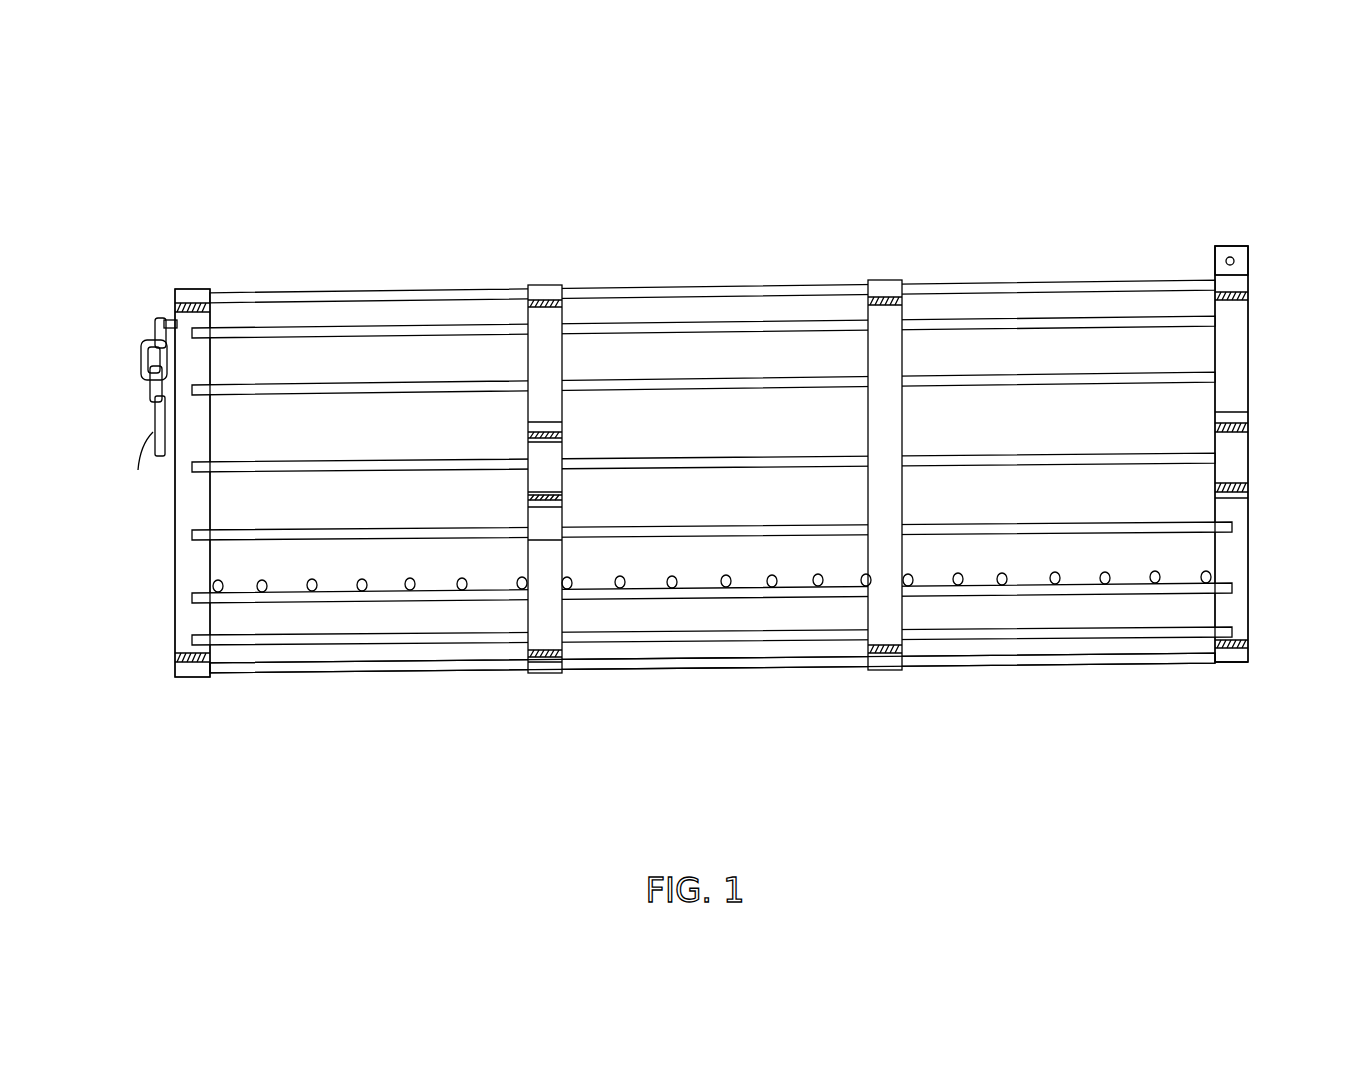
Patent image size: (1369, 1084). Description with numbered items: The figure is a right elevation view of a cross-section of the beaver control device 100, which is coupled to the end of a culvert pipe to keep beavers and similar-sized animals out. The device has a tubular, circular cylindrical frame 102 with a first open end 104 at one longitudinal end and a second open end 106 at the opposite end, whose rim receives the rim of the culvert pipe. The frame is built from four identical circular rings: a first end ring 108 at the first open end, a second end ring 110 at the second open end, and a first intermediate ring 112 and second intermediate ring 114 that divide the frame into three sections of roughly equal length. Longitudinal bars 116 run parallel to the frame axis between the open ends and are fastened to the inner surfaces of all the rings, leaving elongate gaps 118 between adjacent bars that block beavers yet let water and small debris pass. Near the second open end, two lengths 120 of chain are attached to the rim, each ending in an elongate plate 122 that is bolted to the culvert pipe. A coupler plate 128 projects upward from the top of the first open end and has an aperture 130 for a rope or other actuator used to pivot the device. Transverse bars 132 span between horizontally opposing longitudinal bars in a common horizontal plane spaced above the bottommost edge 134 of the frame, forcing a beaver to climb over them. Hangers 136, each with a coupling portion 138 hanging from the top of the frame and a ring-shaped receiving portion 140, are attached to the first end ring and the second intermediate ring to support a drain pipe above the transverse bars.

The beaver control device 100 is at (1233, 125).
The frame 102 is at (152, 275).
The first open end 104 is at (1288, 600).
The second open end 106 is at (150, 618).
The first end ring 108 is at (1238, 467).
The second end ring 110 is at (190, 678).
The first intermediate ring 112 is at (880, 672).
The second intermediate ring 114 is at (540, 677).
The longitudinal bars 116 is at (378, 392).
The gaps 118 is at (682, 370).
The lengths of chain 120 is at (101, 426).
The elongate plate 122 is at (153, 458).
The coupler plate 128 is at (1248, 265).
The aperture 130 is at (1228, 262).
The transverse bars 132 is at (632, 592).
The bottommost edge 134 is at (1250, 660).
The hangers 136 is at (468, 415).
The coupling portion 138 is at (575, 350).
The receiving portion 140 is at (572, 445).